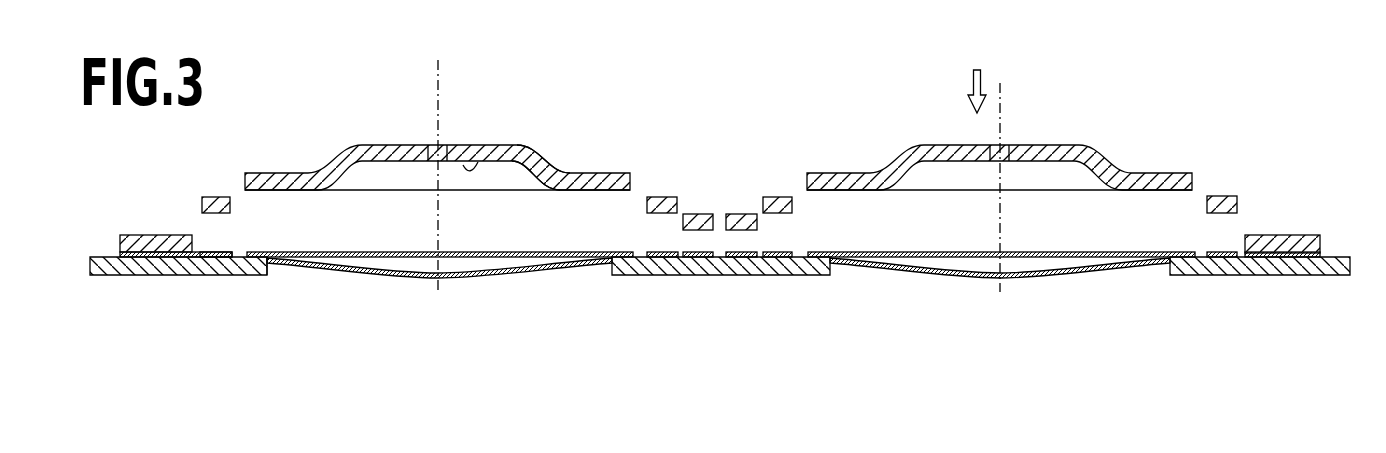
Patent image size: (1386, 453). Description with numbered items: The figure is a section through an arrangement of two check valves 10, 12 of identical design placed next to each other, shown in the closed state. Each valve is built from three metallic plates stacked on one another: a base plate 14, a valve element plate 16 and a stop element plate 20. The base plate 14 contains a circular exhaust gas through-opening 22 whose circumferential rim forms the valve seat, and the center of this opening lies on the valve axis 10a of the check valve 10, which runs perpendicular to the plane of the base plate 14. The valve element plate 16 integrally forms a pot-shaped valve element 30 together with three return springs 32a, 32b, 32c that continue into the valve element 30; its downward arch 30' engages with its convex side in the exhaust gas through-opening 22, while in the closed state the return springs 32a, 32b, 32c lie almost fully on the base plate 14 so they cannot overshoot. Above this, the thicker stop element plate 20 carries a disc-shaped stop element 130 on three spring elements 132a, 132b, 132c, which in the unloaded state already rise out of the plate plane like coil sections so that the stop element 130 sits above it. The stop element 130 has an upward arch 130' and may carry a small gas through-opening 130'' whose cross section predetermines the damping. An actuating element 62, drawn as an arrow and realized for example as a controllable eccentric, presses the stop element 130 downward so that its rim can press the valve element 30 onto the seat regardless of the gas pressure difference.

The check valve 10 is at (296, 138).
The valve axis 10a is at (441, 65).
The check valve 12 is at (1120, 140).
The base plate 14 is at (1262, 275).
The valve element plate 16 is at (1052, 253).
The stop element plate 20 is at (1278, 235).
The exhaust gas through-opening 22 is at (276, 266).
The valve element 30 is at (439, 314).
The arch 30' is at (440, 235).
The return spring 32a is at (660, 252).
The return spring 32b is at (696, 258).
The return spring 32c is at (217, 252).
The actuating element 62 is at (962, 89).
The stop element 130 is at (578, 142).
The arch 130' is at (524, 126).
The gas through-opening 130'' is at (411, 123).
The spring element 132a is at (660, 196).
The spring element 132b is at (700, 213).
The spring element 132c is at (216, 196).